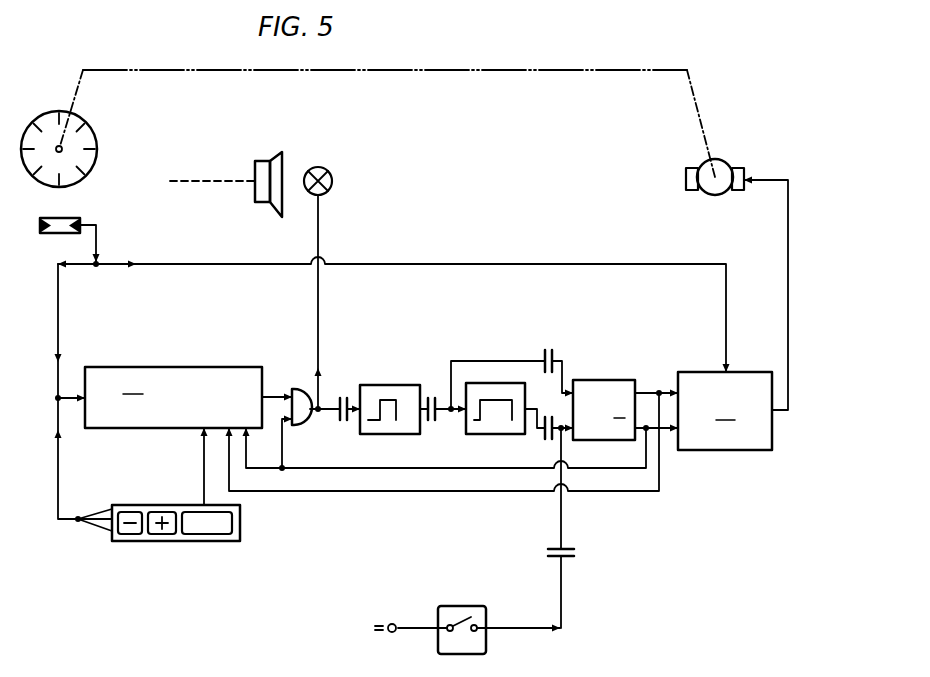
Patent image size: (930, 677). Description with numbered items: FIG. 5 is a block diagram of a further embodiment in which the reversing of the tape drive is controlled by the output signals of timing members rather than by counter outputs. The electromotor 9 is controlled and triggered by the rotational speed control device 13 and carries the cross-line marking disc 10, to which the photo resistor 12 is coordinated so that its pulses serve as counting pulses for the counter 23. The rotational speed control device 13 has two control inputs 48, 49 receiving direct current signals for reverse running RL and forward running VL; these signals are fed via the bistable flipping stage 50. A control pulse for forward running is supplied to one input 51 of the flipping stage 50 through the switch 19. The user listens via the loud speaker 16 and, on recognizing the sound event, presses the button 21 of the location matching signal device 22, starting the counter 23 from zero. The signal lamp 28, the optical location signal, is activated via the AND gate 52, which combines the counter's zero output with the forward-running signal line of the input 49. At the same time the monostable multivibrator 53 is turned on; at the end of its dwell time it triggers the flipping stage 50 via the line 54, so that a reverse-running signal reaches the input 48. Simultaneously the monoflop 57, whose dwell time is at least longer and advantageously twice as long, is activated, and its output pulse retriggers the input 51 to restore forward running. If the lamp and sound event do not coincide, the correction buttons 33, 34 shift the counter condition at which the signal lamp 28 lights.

The electromotor 9 is at (720, 167).
The cross-line marking disc 10 is at (90, 135).
The photo resistor 12 is at (70, 217).
The rotational speed control device 13 is at (725, 411).
The loud speaker 16 is at (281, 169).
The switch 19 is at (458, 612).
The button 21 is at (207, 537).
The location matching signal device 22 is at (248, 523).
The counter 23 is at (173, 397).
The signal lamp 28 is at (327, 172).
The correction button 33 is at (130, 537).
The correction button 34 is at (165, 537).
The control input 48 is at (664, 388).
The control input 49 is at (665, 435).
The bistable flipping stage 50 is at (600, 385).
The input 51 is at (563, 521).
The AND gate 52 is at (298, 388).
The monostable multivibrator 53 is at (379, 390).
The line 54 is at (530, 358).
The monoflop 57 is at (482, 388).